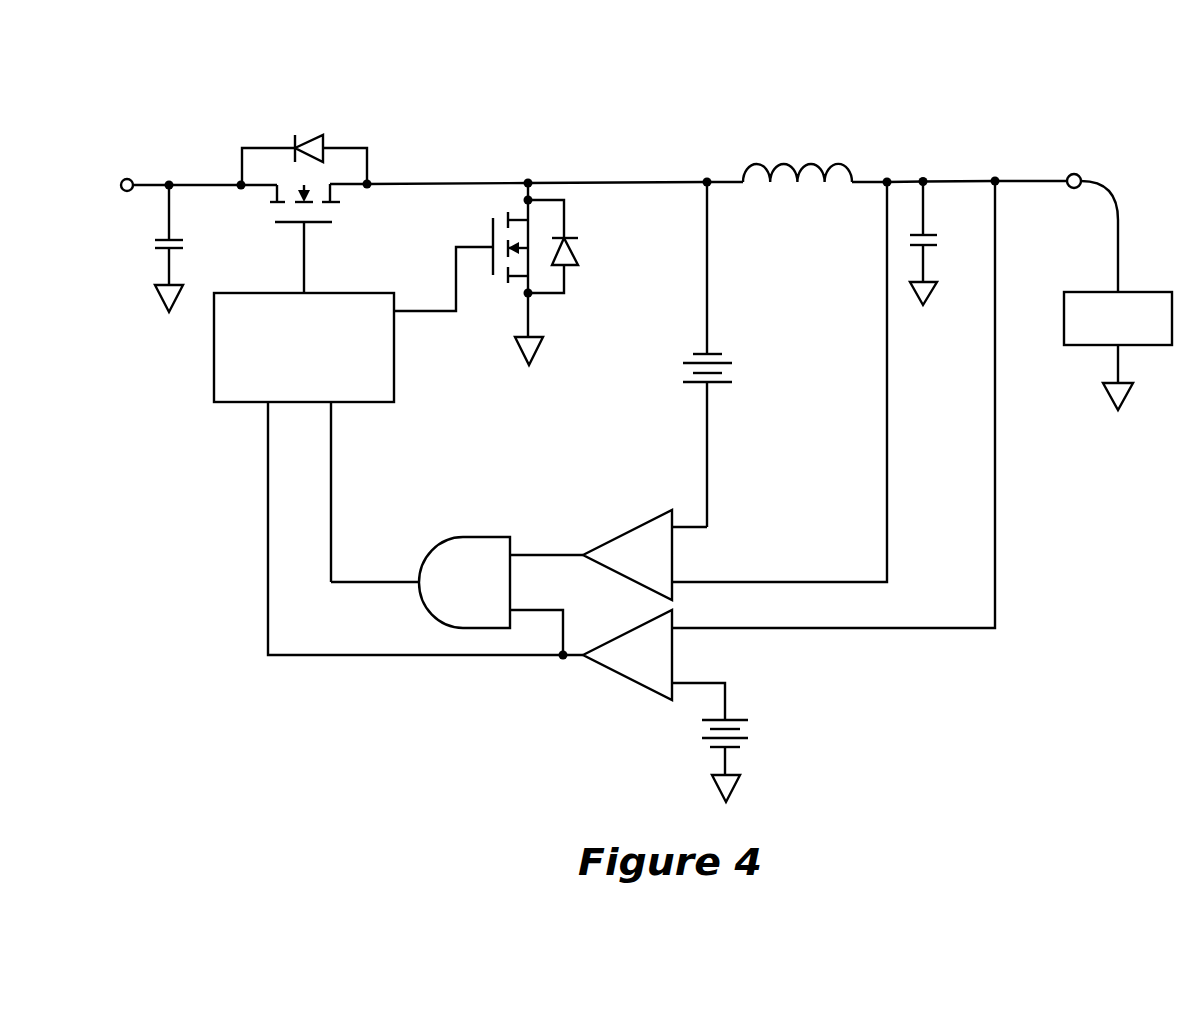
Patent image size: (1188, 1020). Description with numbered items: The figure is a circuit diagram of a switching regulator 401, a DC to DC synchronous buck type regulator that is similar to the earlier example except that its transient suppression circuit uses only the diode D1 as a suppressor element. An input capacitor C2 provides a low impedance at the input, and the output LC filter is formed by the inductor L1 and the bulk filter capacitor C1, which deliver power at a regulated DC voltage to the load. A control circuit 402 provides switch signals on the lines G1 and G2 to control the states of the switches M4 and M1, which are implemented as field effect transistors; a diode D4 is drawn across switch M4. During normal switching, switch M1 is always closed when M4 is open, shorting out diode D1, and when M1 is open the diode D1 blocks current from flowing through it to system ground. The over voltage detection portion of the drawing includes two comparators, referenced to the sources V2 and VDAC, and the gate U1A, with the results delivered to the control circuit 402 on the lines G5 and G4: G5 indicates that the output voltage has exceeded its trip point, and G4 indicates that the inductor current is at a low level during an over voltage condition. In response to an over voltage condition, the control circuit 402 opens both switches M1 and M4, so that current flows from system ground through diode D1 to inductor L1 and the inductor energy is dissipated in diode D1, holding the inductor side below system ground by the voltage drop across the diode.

The regulator 401 is at (592, 123).
The control circuit 402 is at (276, 389).
The capacitor C2 is at (189, 258).
The diode D4 is at (304, 148).
The switch M4 is at (288, 209).
The switch signal line G1 is at (324, 257).
The switch signal line G2 is at (443, 279).
The switch M1 is at (513, 283).
The diode D1 is at (571, 246).
The inductor L1 is at (797, 157).
The bulk filter capacitor C1 is at (942, 255).
The offset voltage source V2 is at (702, 354).
The DAC reference voltage source VDAC is at (747, 754).
The AND gate U1A is at (453, 574).
The signal line G4 is at (375, 492).
The signal line G5 is at (425, 528).